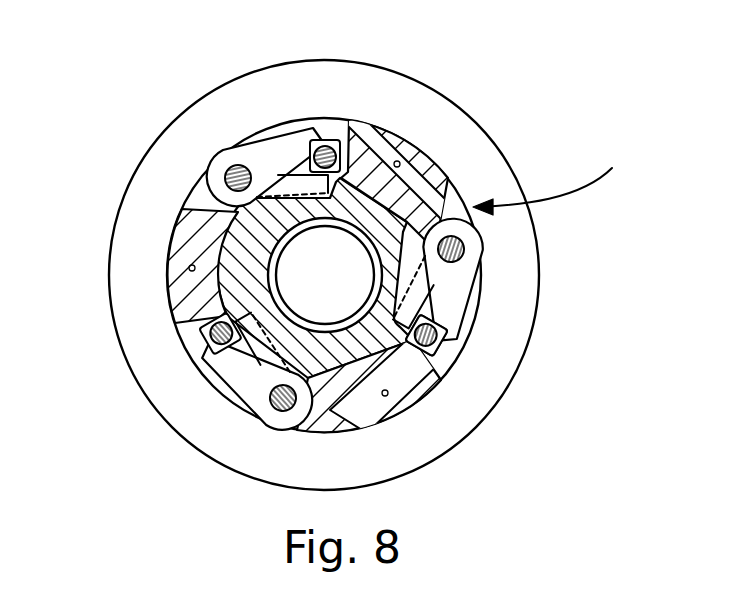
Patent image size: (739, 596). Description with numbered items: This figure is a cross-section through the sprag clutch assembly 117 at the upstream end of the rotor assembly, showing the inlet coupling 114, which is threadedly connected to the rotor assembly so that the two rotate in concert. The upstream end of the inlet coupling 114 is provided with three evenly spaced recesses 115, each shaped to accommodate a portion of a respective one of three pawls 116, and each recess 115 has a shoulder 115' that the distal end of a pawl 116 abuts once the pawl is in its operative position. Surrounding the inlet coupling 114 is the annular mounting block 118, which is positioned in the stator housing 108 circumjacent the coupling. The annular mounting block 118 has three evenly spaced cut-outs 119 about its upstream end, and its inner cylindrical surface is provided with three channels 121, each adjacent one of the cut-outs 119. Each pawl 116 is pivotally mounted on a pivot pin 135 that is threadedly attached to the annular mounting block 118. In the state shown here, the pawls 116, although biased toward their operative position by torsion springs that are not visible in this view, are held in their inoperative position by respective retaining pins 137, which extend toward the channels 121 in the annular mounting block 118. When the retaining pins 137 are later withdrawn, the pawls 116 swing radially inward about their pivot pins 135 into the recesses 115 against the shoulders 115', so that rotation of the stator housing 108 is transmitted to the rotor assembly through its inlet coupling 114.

The stator housing 108 is at (433, 108).
The inlet coupling 114 is at (342, 357).
The recess 115 is at (381, 259).
The shoulder 115' is at (487, 226).
The pawl 116 is at (304, 128).
The sprag clutch assembly 117 is at (553, 176).
The annular mounting block 118 is at (417, 197).
The cut-out 119 is at (265, 130).
The channel 121 is at (337, 135).
The pivot pin 135 is at (233, 187).
The retaining pin 137 is at (316, 181).